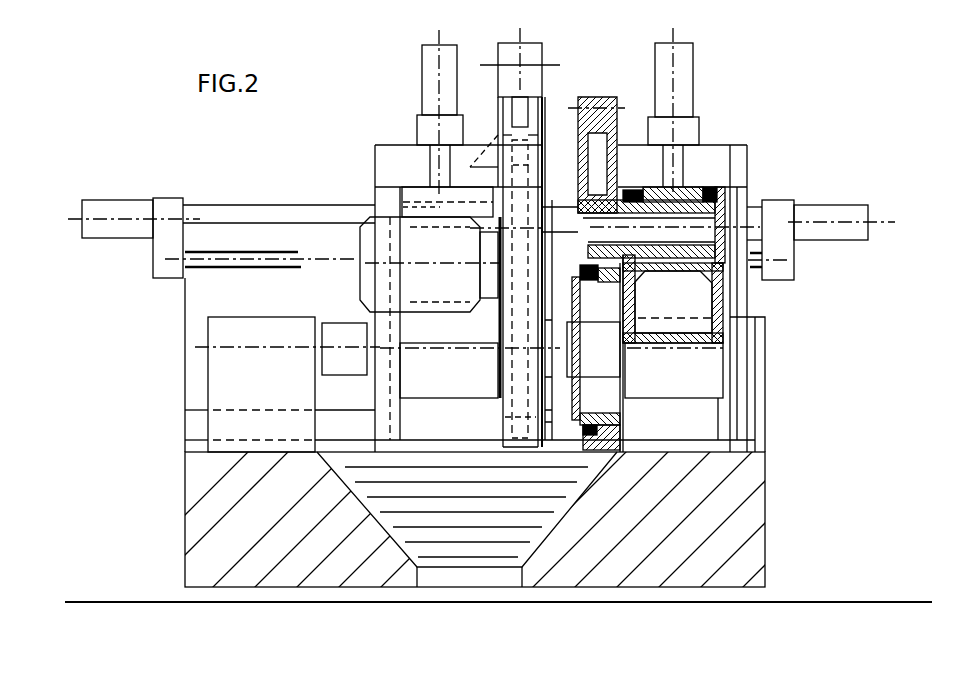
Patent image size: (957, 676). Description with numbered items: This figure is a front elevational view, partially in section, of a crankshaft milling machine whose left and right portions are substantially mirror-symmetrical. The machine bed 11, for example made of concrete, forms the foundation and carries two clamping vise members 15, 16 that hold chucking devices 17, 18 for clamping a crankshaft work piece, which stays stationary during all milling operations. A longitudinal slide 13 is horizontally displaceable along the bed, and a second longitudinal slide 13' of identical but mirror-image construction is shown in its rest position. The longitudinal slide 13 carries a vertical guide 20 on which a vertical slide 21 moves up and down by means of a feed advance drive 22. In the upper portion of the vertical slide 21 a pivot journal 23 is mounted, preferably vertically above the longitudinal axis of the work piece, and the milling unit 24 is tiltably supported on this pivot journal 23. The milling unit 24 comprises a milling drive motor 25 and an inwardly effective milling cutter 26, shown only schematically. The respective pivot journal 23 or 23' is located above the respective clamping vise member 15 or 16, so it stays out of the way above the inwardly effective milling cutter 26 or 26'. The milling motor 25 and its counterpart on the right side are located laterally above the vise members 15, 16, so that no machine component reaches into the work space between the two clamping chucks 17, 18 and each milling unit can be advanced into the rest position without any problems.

The machine bed 11 is at (205, 566).
The longitudinal slide 13 is at (371, 270).
The second longitudinal slide 13' is at (746, 270).
The clamping vise member 15 is at (287, 384).
The clamping vise member 16 is at (648, 432).
The chucking device 17 is at (340, 367).
The chucking device 18 is at (590, 365).
The vertical guide 20 is at (375, 152).
The vertical slide 21 is at (470, 370).
The feed advance drive 22 is at (426, 55).
The pivot journal 23 is at (379, 198).
The pivot journal 23' is at (717, 183).
The milling unit 24 is at (496, 314).
The milling drive motor 25 is at (430, 264).
The milling cutter 26 is at (654, 192).
The milling cutter 26' is at (596, 357).